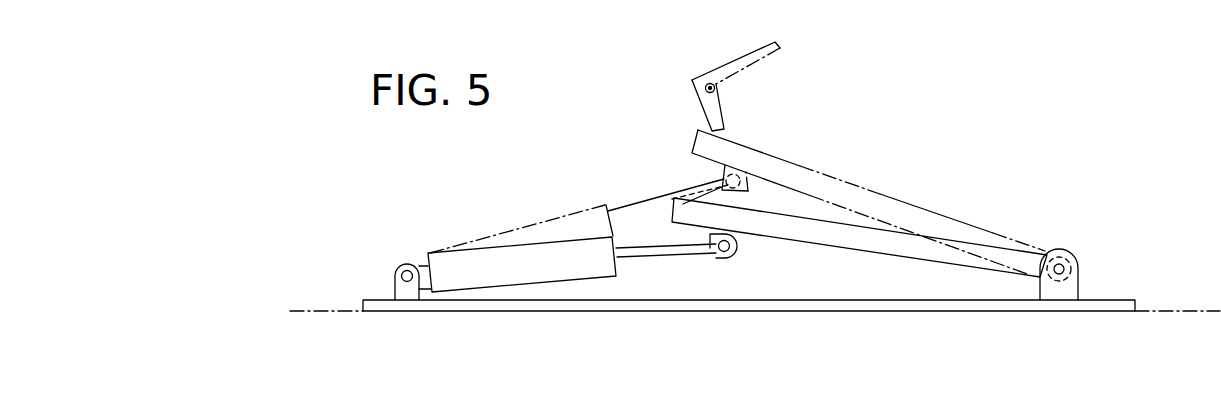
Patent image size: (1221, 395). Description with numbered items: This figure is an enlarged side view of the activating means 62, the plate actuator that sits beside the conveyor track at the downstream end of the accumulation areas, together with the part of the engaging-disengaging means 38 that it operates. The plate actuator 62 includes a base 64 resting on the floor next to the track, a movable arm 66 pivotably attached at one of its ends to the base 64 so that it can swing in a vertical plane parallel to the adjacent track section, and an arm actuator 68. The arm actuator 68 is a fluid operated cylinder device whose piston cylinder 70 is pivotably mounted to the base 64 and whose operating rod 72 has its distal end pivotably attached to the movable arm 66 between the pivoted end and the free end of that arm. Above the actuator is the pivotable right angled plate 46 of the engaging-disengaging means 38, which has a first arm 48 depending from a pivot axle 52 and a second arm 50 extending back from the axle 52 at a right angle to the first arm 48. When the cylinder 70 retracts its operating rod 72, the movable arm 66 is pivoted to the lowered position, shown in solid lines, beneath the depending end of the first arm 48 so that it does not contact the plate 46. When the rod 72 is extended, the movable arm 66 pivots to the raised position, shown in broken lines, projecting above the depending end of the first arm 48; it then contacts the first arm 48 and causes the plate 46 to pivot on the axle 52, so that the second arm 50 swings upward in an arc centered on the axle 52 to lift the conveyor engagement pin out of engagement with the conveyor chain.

The engaging-disengaging means 38 is at (805, 90).
The pivotable right angled plate 46 is at (686, 92).
The first arm 48 is at (720, 116).
The second arm 50 is at (727, 64).
The pivot axle 52 is at (717, 85).
The activating means 62 is at (889, 178).
The base 64 is at (1118, 300).
The movable arm 66 is at (996, 233).
The arm actuator 68 is at (592, 189).
The piston cylinder 70 is at (540, 222).
The operating rod 72 is at (650, 247).